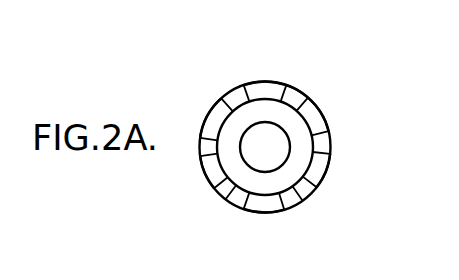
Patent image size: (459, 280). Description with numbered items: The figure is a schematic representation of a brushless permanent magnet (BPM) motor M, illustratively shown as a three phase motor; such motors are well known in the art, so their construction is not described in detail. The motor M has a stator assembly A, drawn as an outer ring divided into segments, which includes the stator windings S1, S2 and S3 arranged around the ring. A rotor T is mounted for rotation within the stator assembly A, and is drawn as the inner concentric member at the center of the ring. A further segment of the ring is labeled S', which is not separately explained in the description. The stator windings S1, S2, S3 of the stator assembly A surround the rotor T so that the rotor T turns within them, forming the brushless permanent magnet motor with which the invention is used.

The brushless permanent magnet motor BPM is at (265, 111).
The motor M is at (190, 72).
The rotor T is at (242, 153).
The stator winding S1 is at (272, 82).
The stator assembly A is at (302, 87).
The stator winding S2 is at (322, 112).
The stator winding S3 is at (206, 118).
The magnet segment S' is at (264, 224).